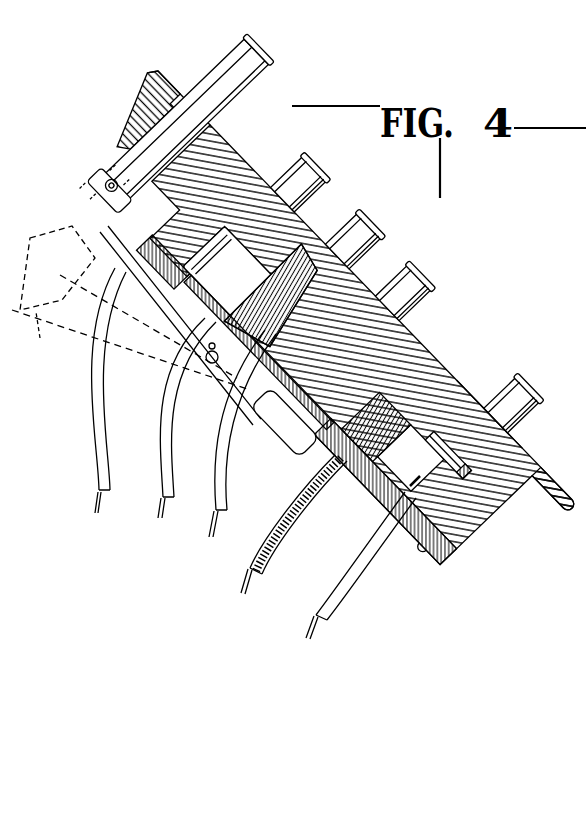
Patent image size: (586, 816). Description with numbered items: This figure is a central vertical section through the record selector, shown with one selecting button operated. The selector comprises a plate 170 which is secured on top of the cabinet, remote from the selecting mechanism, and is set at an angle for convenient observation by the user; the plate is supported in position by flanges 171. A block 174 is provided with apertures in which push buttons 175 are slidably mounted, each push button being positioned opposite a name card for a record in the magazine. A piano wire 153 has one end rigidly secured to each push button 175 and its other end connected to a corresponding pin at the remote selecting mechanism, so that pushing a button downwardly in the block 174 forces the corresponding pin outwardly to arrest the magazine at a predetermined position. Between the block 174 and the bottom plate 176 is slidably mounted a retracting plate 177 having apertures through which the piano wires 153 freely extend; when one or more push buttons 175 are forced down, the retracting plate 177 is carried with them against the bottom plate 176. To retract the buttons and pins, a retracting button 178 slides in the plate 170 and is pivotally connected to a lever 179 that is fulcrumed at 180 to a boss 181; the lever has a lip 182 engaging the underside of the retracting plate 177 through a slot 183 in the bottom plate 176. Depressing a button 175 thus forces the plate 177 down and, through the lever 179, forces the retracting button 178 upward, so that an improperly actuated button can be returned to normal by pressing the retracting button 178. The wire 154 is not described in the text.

The piano wire 153 is at (100, 500).
The shielded conductor 154 is at (292, 525).
The plate 170 is at (250, 170).
The flanges 171 is at (148, 89).
The block 174 is at (466, 393).
The push buttons 175 is at (345, 218).
The bottom plate 176 is at (368, 490).
The retracting plate 177 is at (382, 470).
The retracting button 178 is at (210, 88).
The lever 179 is at (118, 266).
The fulcrum 180 is at (190, 367).
The boss 181 is at (228, 271).
The lip 182 is at (322, 396).
The slot 183 is at (317, 415).